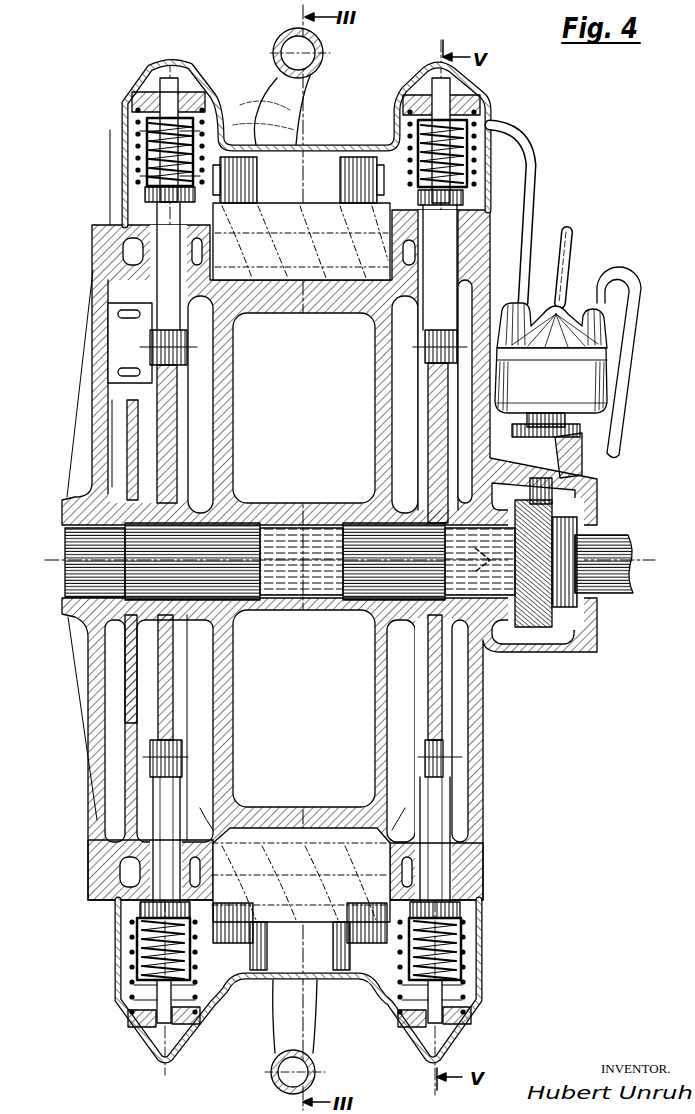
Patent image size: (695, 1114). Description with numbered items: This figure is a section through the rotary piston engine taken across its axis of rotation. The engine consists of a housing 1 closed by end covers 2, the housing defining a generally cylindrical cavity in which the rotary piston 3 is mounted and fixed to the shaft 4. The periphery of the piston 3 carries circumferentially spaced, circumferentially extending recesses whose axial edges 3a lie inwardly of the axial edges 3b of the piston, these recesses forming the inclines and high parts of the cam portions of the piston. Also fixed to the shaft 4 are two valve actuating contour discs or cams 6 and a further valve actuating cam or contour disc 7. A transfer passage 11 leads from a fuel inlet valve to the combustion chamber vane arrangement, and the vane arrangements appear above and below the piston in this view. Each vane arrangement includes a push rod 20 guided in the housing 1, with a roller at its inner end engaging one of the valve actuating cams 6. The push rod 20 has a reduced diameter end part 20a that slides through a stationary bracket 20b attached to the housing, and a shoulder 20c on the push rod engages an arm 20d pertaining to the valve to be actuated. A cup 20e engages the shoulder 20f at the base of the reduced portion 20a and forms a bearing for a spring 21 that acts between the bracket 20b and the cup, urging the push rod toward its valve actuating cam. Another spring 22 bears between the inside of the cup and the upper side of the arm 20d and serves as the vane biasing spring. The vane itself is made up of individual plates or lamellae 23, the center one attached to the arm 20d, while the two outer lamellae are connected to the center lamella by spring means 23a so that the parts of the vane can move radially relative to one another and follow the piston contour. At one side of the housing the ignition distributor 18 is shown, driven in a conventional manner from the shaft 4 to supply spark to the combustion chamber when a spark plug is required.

The housing 1 is at (88, 862).
The end covers 2 is at (97, 820).
The rotary piston 3 is at (388, 708).
The axial edges of recesses 3a is at (217, 840).
The axial edges of piston 3b is at (299, 809).
The shaft 4 is at (600, 572).
The valve actuating contour discs 6 is at (158, 725).
The valve actuating cam 7 is at (125, 690).
The transfer passage 11 is at (287, 78).
The ignition distributor 18 is at (580, 285).
The push rod 20 is at (170, 218).
The reduced diameter end part 20a is at (428, 70).
The stationary bracket 20b is at (487, 97).
The shoulder 20c is at (460, 210).
The arm 20d is at (487, 220).
The cup 20e is at (473, 142).
The shoulder 20f is at (420, 100).
The spring 21 is at (138, 118).
The vane biasing spring 22 is at (150, 155).
The lamellae 23 is at (313, 213).
The spring means 23a is at (377, 160).